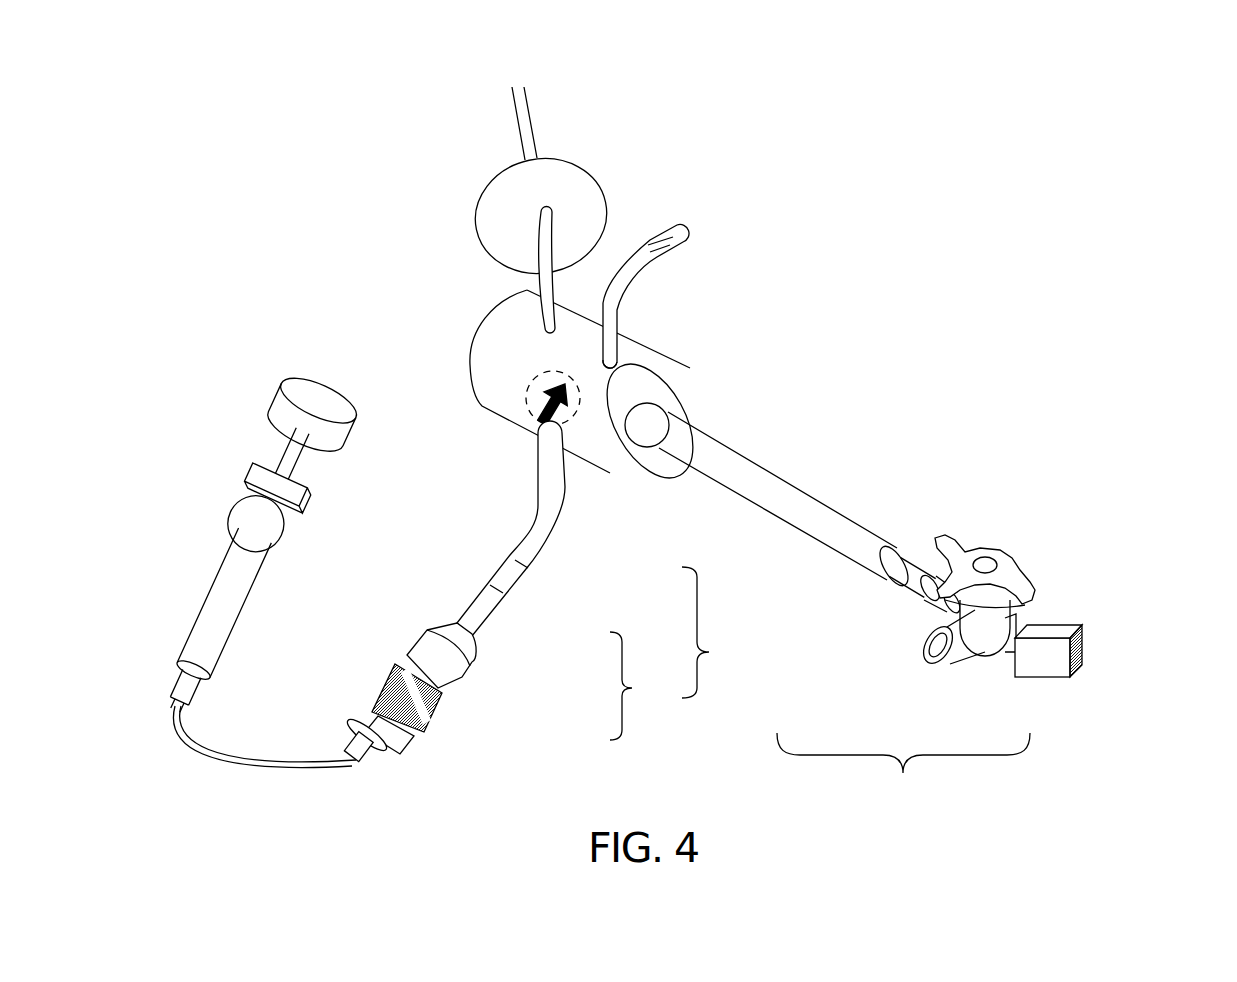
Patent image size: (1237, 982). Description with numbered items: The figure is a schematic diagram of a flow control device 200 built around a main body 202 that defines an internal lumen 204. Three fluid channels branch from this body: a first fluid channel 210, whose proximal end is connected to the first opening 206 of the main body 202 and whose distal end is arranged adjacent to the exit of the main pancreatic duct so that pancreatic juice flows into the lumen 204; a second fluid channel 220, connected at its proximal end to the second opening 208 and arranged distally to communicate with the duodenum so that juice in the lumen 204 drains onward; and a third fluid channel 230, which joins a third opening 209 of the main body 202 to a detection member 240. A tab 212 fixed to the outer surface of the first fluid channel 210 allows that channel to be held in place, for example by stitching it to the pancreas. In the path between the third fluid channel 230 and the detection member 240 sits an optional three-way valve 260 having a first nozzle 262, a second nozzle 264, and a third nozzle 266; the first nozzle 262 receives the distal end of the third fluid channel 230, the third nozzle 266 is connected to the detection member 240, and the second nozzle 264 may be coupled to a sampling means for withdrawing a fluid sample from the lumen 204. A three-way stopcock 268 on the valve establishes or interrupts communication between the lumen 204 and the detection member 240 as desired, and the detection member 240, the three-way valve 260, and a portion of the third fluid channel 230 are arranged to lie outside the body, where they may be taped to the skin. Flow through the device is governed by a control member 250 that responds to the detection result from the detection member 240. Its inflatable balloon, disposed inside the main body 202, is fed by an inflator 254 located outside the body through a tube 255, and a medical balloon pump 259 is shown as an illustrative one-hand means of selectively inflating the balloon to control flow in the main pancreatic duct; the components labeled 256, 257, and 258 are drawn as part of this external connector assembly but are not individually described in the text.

The flow control device 200 is at (240, 141).
The main body 202 is at (483, 407).
The lumen 204 is at (660, 392).
The first opening 206 is at (545, 323).
The second opening 208 is at (610, 365).
The third opening 209 is at (640, 425).
The first fluid channel 210 is at (530, 143).
The tab 212 is at (560, 213).
The second fluid channel 220 is at (686, 236).
The third fluid channel 230 is at (753, 487).
The detection member 240 is at (1076, 652).
The control member 250 is at (721, 632).
The inflator 254 is at (648, 686).
The tube 255 is at (558, 528).
The strain relief dome 256 is at (437, 655).
The knurled nut 257 is at (433, 707).
The plug 258 is at (430, 717).
The medical balloon pump 259 is at (223, 615).
The three-way valve 260 is at (908, 669).
The first nozzle 262 is at (923, 592).
The second nozzle 264 is at (963, 635).
The third nozzle 266 is at (1008, 643).
The three-way stopcock 268 is at (943, 598).